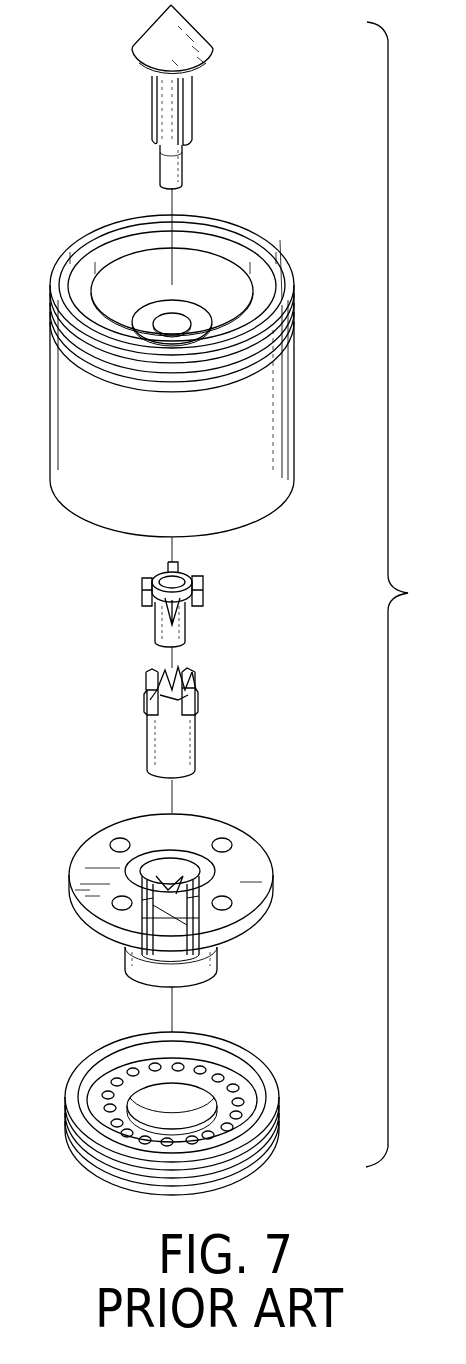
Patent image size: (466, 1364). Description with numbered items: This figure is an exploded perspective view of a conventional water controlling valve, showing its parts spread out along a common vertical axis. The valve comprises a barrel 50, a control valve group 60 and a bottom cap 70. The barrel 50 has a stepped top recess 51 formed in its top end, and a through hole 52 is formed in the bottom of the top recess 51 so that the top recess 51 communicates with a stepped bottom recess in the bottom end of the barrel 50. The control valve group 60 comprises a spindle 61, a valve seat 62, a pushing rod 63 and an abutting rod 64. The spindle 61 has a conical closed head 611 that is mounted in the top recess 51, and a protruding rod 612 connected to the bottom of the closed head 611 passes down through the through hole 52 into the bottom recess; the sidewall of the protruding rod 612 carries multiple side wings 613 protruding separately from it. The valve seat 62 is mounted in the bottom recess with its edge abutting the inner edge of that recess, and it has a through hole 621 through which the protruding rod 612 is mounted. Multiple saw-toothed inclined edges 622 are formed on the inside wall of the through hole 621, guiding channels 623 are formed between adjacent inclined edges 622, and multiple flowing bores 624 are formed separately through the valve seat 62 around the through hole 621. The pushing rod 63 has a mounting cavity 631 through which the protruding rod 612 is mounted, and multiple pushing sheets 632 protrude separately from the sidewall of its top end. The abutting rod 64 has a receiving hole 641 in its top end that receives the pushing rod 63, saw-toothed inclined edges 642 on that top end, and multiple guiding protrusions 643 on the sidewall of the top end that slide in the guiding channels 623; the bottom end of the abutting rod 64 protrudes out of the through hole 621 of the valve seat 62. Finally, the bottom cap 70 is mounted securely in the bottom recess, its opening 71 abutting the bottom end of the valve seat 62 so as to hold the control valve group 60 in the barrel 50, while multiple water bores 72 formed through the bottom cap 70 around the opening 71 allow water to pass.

The barrel 50 is at (207, 376).
The top recess 51 is at (233, 302).
The through hole 52 is at (175, 325).
The control valve group 60 is at (292, 595).
The spindle 61 is at (192, 97).
The closed head 611 is at (150, 32).
The protruding rod 612 is at (166, 162).
The side wings 613 is at (172, 113).
The valve seat 62 is at (193, 892).
The through hole 621 is at (153, 867).
The inclined edges 622 is at (175, 873).
The guiding channels 623 is at (200, 916).
The flowing bores 624 is at (232, 846).
The pushing rod 63 is at (179, 597).
The mounting cavity 631 is at (192, 598).
The pushing sheets 632 is at (142, 592).
The abutting rod 64 is at (175, 711).
The receiving hole 641 is at (170, 684).
The inclined edges 642 is at (157, 672).
The guiding protrusions 643 is at (147, 712).
The bottom cap 70 is at (188, 1110).
The opening 71 is at (187, 1113).
The water bores 72 is at (107, 1094).